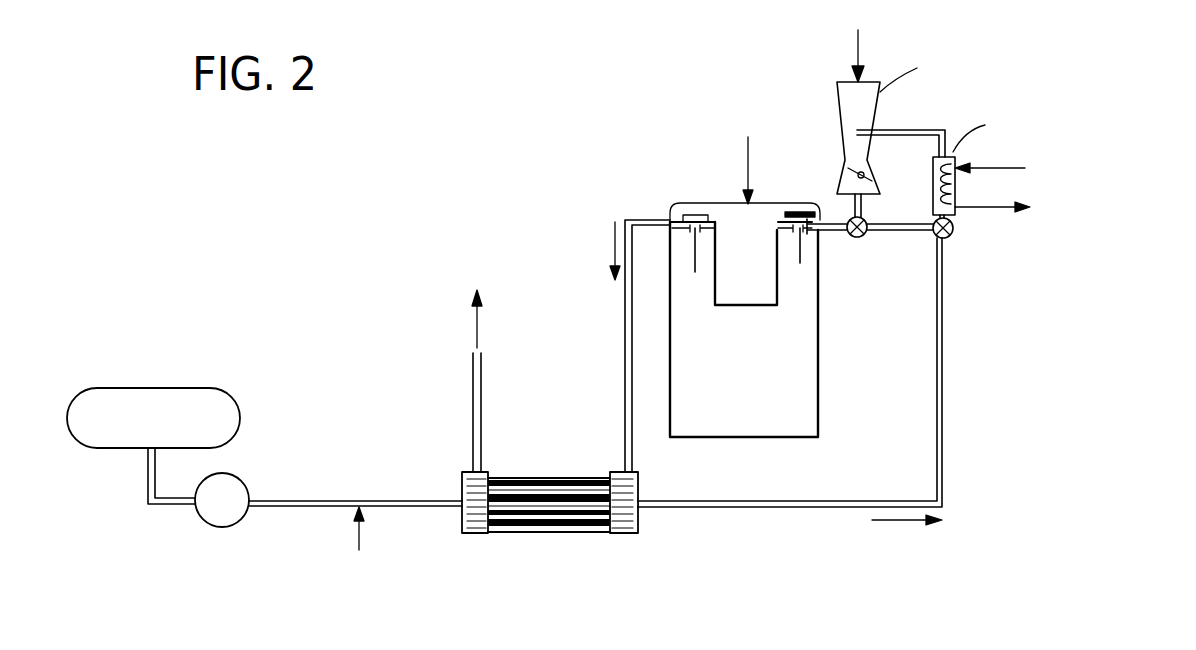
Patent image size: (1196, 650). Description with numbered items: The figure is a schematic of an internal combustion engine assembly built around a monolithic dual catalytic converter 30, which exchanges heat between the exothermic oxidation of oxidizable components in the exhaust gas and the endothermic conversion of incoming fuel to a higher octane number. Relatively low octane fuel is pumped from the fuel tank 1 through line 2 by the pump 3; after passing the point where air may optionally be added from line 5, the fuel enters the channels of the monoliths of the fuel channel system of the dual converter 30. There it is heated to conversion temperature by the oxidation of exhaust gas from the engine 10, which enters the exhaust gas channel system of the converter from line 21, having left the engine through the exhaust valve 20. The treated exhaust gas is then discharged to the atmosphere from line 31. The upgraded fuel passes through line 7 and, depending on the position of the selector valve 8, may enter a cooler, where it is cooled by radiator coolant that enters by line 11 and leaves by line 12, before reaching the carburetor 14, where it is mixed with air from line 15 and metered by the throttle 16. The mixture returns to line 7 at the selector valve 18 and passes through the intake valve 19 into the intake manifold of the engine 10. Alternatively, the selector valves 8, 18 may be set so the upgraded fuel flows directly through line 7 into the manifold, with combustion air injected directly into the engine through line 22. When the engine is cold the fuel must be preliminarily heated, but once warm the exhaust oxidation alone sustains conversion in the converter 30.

The fuel tank 1 is at (186, 390).
The line 2 is at (178, 510).
The pump 3 is at (242, 482).
The line 5 is at (361, 541).
The line 7 is at (841, 509).
The selector valve 8 is at (950, 238).
The engine 10 is at (819, 418).
The line 11 is at (990, 167).
The line 12 is at (989, 206).
The carburetor 14 is at (876, 113).
The line 15 is at (862, 53).
The throttle 16 is at (868, 177).
The selector valve 18 is at (860, 238).
The intake valve 19 is at (796, 209).
The exhaust valve 20 is at (700, 211).
The line 21 is at (624, 348).
The line 22 is at (751, 173).
The dual converter 30 is at (553, 480).
The line 31 is at (482, 441).